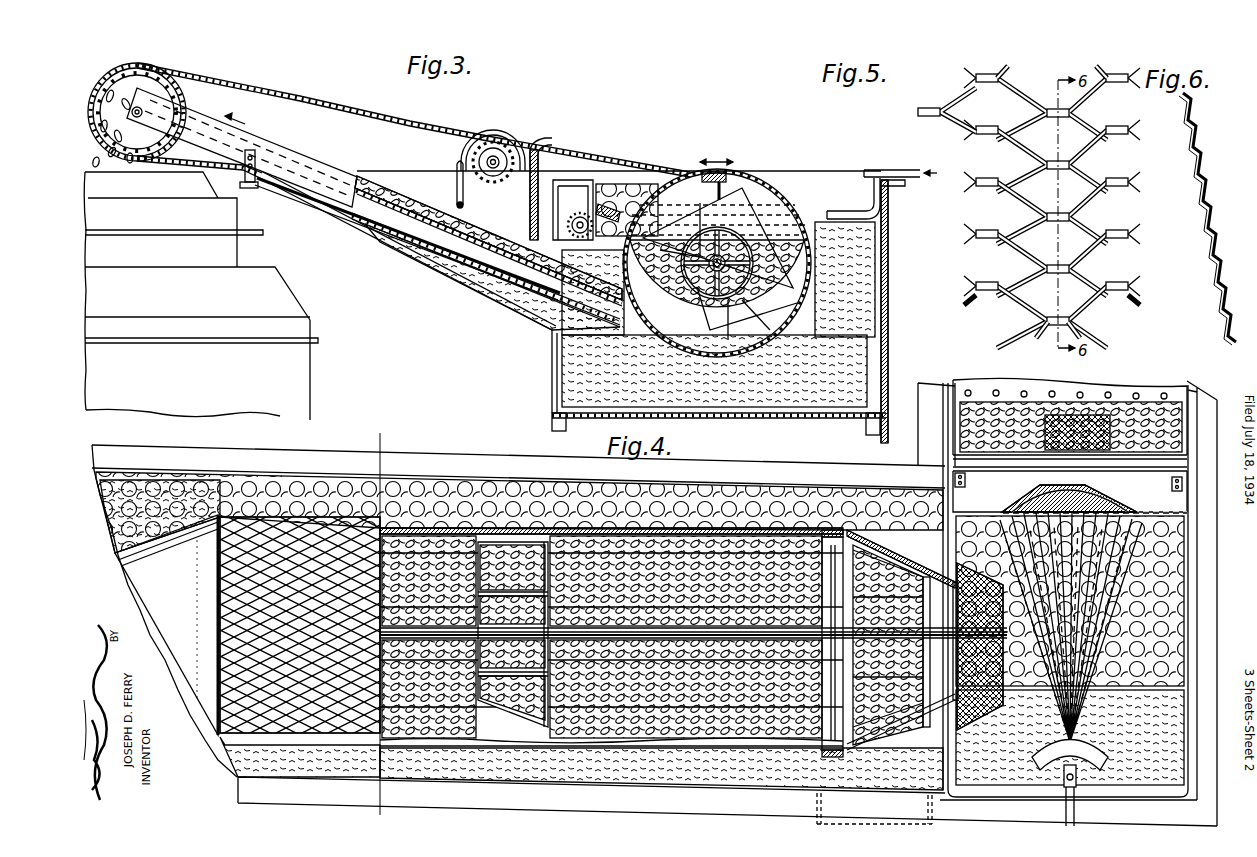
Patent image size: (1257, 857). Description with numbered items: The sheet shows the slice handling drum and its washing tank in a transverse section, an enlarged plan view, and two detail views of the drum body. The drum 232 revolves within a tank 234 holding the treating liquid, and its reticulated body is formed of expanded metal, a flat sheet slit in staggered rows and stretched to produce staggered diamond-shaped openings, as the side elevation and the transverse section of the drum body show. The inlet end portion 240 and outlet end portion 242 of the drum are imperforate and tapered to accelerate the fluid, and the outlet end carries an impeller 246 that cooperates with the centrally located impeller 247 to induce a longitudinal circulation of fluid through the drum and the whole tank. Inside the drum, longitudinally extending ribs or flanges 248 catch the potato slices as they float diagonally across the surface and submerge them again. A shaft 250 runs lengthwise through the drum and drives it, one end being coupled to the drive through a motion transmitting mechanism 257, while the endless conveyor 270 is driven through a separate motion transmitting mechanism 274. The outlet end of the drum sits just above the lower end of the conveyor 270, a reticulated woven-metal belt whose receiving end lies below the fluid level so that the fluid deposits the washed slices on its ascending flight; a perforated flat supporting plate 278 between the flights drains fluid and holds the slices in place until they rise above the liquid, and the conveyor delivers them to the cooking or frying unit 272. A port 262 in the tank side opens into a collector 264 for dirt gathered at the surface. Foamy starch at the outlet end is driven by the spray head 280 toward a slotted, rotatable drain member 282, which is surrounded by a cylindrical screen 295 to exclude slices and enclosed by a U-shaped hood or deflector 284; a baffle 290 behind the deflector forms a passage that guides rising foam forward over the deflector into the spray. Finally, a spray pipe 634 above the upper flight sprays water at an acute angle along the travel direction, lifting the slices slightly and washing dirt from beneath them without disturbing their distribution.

In FIG. 3, the drum 232 is at (790, 198).
In FIG. 4, the drum 232 is at (303, 520).
In FIG. 3, the tank 234 is at (552, 375).
In FIG. 4, the tank 234 is at (723, 478).
In FIG. 4, the inlet end portion 240 is at (166, 625).
In FIG. 4, the outlet end portion 242 is at (902, 635).
In FIG. 3, the impeller 246 is at (717, 254).
In FIG. 4, the impeller 246 is at (876, 643).
In FIG. 4, the centrally located impeller 247 is at (513, 634).
In FIG. 3, the internal longitudinally extending ribs or flanges 248 is at (740, 176).
In FIG. 4, the internal longitudinally extending ribs or flanges 248 is at (611, 637).
In FIG. 4, the shaft 250 is at (415, 626).
In FIG. 3, the motion transmitting mechanism 257 is at (525, 146).
In FIG. 4, the port 262 is at (844, 808).
In FIG. 4, the collector 264 is at (934, 813).
In FIG. 3, the endless conveyor 270 is at (386, 186).
In FIG. 4, the endless conveyor 270 is at (1033, 572).
In FIG. 3, the cooking or frying unit 272 is at (201, 296).
In FIG. 3, the motion transmitting mechanism 274 is at (336, 108).
In FIG. 3, the flat supporting plate 278 is at (388, 208).
In FIG. 4, the flat supporting plate 278 is at (1073, 393).
In FIG. 3, the spray head 280 is at (850, 209).
In FIG. 4, the spray head 280 is at (1071, 669).
In FIG. 3, the drain member 282 is at (560, 220).
In FIG. 4, the drain member 282 is at (1097, 513).
In FIG. 3, the U-shaped hood or deflector 284 is at (589, 180).
In FIG. 4, the U-shaped hood or deflector 284 is at (1070, 491).
In FIG. 3, the baffle 290 is at (530, 181).
In FIG. 4, the baffle 290 is at (1070, 462).
In FIG. 3, the cylindrical screen 295 is at (605, 212).
In FIG. 4, the cylindrical screen 295 is at (1114, 498).
In FIG. 3, the spray pipe 634 is at (458, 203).